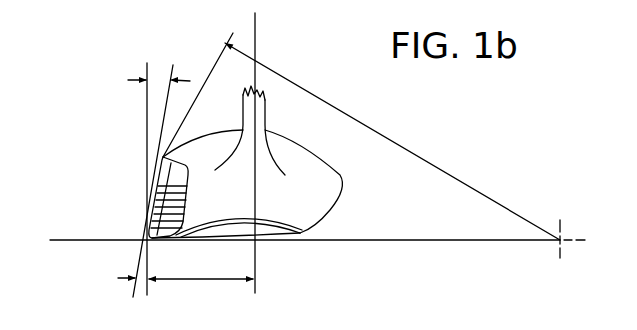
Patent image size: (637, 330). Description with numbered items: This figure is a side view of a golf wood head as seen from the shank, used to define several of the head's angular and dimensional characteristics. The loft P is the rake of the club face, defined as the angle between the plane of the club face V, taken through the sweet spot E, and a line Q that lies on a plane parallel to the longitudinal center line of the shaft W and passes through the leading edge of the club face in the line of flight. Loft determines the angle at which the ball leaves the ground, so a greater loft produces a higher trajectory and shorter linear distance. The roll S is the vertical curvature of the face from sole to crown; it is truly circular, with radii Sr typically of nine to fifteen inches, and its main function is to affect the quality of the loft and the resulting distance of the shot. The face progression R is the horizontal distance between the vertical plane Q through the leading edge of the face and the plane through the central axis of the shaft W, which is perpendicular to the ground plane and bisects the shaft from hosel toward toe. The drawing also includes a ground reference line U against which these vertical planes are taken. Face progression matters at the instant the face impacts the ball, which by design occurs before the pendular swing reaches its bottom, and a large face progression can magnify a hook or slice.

The loft P is at (157, 80).
The roll S is at (213, 63).
The longitudinal center line of the shaft W is at (256, 33).
The radii of roll Sr is at (383, 134).
The line on a plane parallel to the shaft center line Q is at (147, 126).
The sweet spot E is at (152, 187).
The ground plane line U is at (88, 239).
The plane of the club face V is at (138, 262).
The face progression R is at (199, 282).